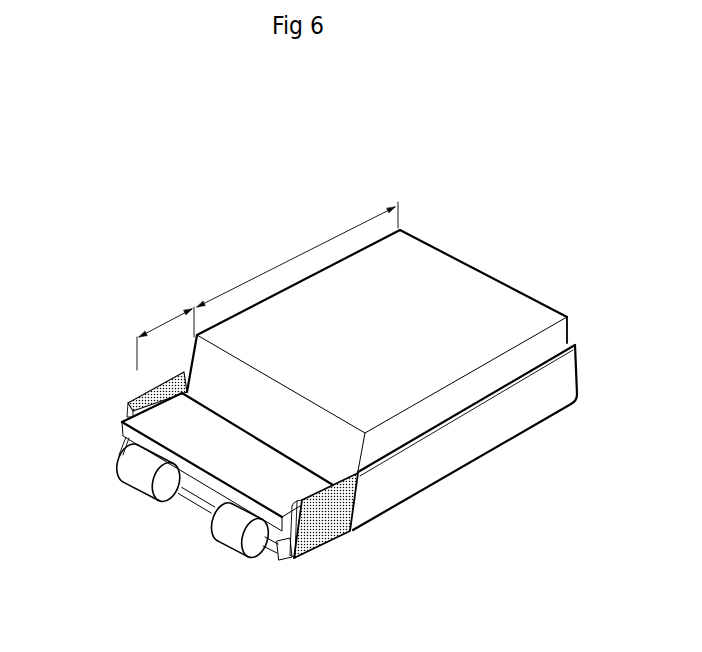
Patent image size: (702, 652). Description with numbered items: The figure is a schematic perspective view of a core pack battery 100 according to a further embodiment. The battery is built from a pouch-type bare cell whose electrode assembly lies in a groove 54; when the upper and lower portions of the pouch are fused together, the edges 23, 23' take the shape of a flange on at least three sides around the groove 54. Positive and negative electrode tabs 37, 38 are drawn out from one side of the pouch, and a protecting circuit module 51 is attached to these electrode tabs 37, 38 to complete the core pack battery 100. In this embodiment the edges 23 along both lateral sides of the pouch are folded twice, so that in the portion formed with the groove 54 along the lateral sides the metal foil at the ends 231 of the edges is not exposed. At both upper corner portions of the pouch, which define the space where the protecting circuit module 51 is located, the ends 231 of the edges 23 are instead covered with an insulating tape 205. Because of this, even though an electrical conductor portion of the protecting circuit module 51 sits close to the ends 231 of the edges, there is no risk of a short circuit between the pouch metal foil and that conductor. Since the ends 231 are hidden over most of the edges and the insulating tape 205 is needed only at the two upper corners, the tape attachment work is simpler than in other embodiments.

The core pack battery 100 is at (178, 258).
The groove 54 is at (470, 288).
The edges 23 is at (465, 437).
The insulating tape 205 is at (357, 528).
The ends of the edges 231 is at (283, 562).
The protecting circuit module 51 is at (148, 421).
The edge 23' is at (198, 523).
The positive electrode tab 37 is at (134, 471).
The negative electrode tab 38 is at (226, 530).